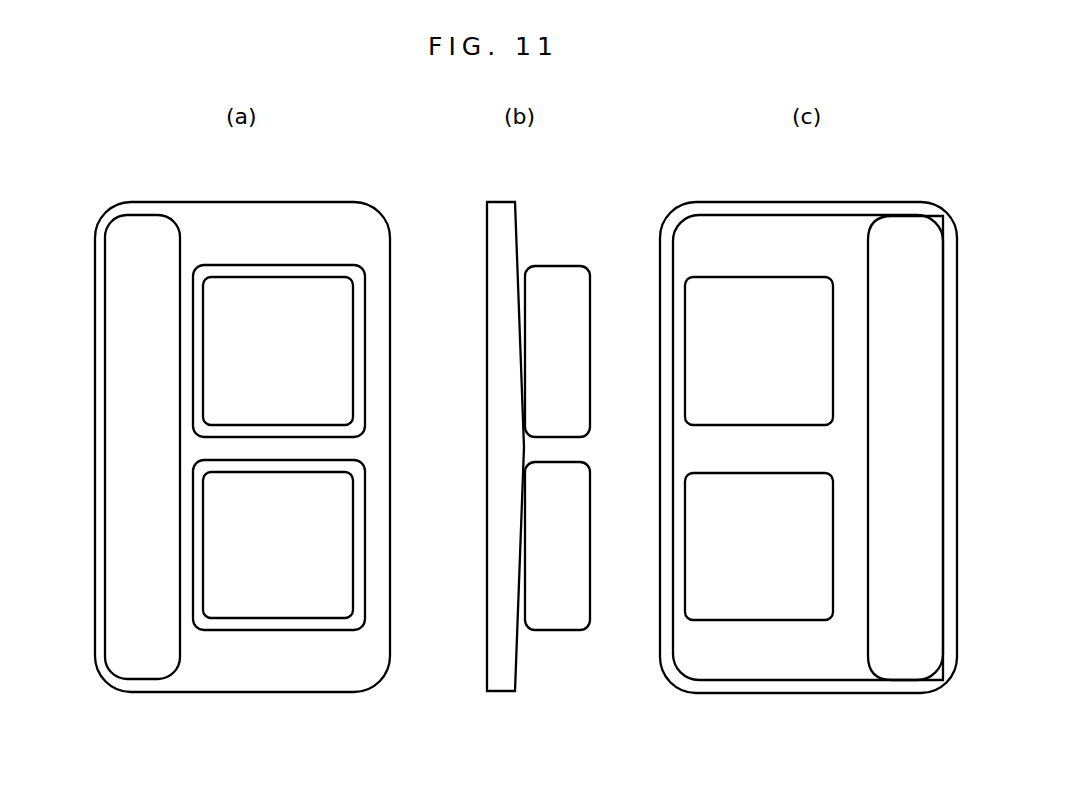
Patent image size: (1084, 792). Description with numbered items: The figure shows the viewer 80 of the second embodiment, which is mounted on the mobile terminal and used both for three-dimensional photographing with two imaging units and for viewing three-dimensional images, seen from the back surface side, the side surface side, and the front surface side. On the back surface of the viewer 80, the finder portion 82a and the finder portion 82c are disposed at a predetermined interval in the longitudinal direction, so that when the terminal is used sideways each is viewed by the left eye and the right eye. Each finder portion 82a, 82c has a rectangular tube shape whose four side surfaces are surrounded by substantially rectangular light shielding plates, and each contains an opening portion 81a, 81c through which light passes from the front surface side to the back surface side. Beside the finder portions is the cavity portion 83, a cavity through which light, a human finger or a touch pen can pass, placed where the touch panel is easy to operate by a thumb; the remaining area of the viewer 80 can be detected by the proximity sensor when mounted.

The viewer 80 is at (312, 202).
The opening portion 81a is at (313, 277).
The opening portion 81c is at (313, 618).
The finder portion 82a is at (253, 265).
The finder portion 82c is at (245, 630).
The cavity portion 83 is at (180, 226).